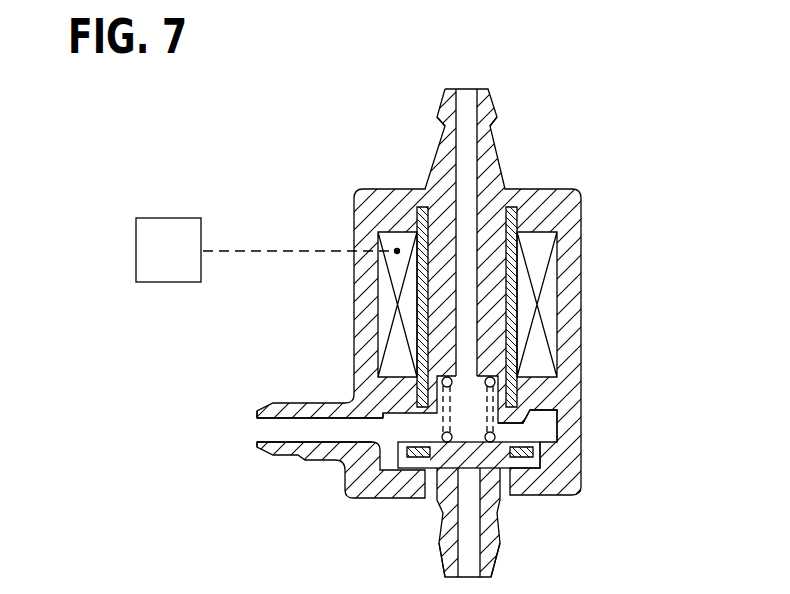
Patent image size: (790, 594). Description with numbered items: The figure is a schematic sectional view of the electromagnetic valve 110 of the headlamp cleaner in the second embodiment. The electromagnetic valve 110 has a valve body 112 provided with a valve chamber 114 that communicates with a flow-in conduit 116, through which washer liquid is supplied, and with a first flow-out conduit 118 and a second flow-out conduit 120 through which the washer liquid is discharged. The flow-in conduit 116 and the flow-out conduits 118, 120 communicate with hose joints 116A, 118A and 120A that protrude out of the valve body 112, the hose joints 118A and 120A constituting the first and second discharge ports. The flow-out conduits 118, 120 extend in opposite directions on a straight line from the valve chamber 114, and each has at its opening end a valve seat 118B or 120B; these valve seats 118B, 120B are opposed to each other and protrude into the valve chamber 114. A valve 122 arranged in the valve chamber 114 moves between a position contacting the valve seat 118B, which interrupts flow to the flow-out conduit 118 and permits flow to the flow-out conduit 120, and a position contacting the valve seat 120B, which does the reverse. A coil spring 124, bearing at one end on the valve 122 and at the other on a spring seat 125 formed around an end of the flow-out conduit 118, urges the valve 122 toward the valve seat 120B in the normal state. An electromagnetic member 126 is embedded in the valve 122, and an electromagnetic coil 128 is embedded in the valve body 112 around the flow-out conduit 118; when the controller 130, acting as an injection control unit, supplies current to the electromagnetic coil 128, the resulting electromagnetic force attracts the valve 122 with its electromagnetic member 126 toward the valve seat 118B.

The electromagnetic valve 110 is at (614, 143).
The valve body 112 is at (578, 330).
The valve chamber 114 is at (553, 428).
The flow-in conduit 116 is at (364, 442).
The hose joint 116A is at (272, 452).
The first flow-out conduit 118 is at (462, 212).
The hose joint 118A is at (485, 115).
The valve seat 118B is at (500, 405).
The second flow-out conduit 120 is at (484, 492).
The hose joint 120A is at (497, 552).
The valve seat 120B is at (462, 502).
The valve 122 is at (432, 432).
The coil spring 124 is at (405, 437).
The spring seat 125 is at (496, 381).
The electromagnetic member 126 is at (540, 457).
The electromagnetic coil 128 is at (410, 293).
The controller 130 is at (163, 228).